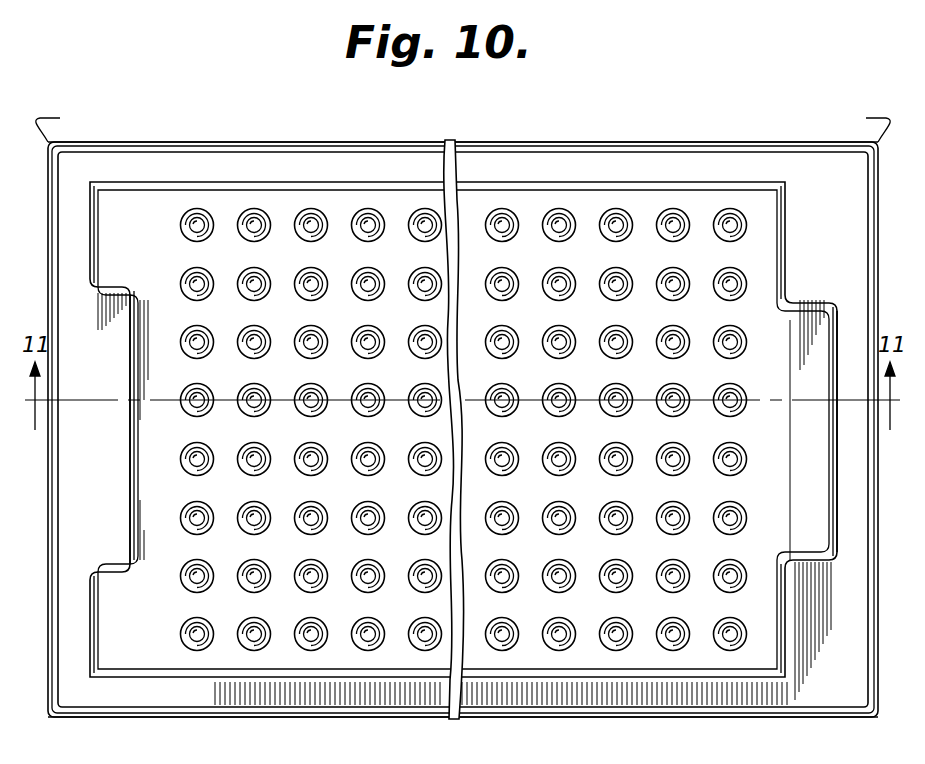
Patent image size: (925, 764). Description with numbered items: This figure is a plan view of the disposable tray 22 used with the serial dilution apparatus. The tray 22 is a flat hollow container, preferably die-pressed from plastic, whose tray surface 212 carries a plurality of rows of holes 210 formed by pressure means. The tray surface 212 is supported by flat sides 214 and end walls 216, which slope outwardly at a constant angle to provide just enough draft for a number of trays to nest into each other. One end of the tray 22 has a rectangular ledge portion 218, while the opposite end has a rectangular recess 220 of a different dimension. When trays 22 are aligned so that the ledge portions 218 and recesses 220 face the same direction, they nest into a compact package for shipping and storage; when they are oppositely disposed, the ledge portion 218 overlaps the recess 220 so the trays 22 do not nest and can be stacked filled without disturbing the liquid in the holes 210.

The disposable tray 22 is at (735, 718).
The holes 210 is at (255, 268).
The tray surface 212 is at (153, 623).
The flat sides 214 is at (335, 142).
The end walls 216 is at (463, 123).
The rectangular ledge portion 218 is at (806, 306).
The rectangular recess 220 is at (113, 475).